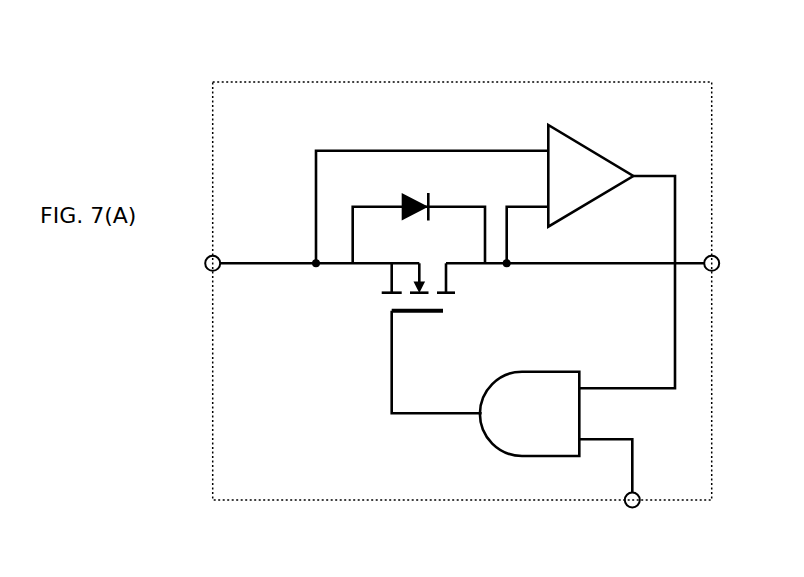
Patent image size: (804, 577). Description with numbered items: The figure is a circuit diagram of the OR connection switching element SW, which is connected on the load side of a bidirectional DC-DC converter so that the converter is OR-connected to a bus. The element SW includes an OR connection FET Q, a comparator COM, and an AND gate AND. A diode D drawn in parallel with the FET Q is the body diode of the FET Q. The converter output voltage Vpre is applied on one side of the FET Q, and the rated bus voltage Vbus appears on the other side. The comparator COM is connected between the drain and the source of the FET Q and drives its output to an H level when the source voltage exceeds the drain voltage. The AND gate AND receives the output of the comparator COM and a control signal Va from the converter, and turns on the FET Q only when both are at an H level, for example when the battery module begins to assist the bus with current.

The OR connection switching element SW is at (665, 58).
The comparator COM is at (595, 149).
The diode D is at (419, 214).
The OR connection FET Q is at (383, 312).
The AND gate AND is at (550, 371).
The output voltage of the bidirectional DC-DC converter Vpre is at (278, 264).
The rated bus voltage Vbus is at (618, 264).
The control signal Va is at (615, 495).